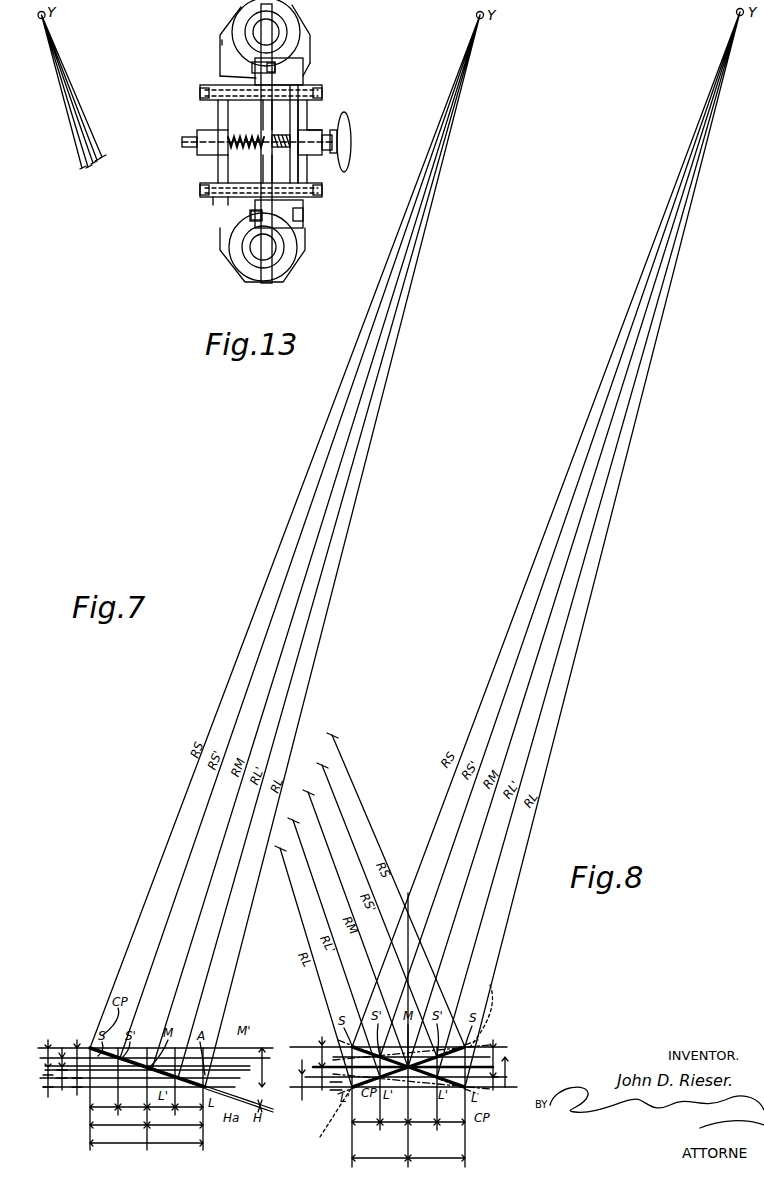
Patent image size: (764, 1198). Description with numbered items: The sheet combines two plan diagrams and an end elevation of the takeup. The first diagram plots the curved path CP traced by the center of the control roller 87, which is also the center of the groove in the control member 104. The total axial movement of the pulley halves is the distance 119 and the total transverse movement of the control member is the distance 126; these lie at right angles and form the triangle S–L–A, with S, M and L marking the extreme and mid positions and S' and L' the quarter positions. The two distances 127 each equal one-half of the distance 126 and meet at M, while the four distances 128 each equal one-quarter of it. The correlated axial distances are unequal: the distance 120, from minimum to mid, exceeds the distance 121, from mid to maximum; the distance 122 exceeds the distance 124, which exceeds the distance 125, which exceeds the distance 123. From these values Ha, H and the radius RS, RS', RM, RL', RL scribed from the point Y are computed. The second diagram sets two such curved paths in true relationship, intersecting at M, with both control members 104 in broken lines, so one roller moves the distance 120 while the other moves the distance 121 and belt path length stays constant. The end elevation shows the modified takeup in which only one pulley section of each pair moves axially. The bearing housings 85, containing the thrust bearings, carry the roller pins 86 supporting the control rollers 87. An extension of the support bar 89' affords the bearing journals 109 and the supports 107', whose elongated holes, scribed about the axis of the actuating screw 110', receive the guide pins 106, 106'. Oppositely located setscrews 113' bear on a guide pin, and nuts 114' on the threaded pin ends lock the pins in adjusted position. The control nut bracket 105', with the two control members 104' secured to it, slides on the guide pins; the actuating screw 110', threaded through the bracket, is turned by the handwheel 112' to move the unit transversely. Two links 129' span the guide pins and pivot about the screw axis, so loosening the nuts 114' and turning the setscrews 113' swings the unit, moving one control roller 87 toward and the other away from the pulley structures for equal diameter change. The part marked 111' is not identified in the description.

In FIG. 13, the bearing housing 85 is at (288, 12).
In FIG. 13, the roller pin 86 is at (252, 28).
In FIG. 13, the control roller 87 is at (252, 67).
In FIG. 13, the support bar 89' is at (196, 41).
In FIG. 8, the control member 104 is at (495, 1013).
In FIG. 13, the control member 104' is at (297, 133).
In FIG. 8, the control member 104' is at (327, 1117).
In FIG. 13, the control nut bracket 105' is at (261, 150).
In FIG. 13, the left bracket 106 is at (205, 126).
In FIG. 13, the guide pin 106' is at (234, 204).
In FIG. 13, the support 107' is at (279, 133).
In FIG. 13, the right bracket 109 is at (313, 150).
In FIG. 13, the actuating screw 110' is at (246, 133).
In FIG. 13, the flange 111' is at (324, 117).
In FIG. 13, the handwheel 112' is at (280, 130).
In FIG. 13, the setscrew 113' is at (264, 194).
In FIG. 13, the nut 114' is at (270, 129).
In FIG. 7, the total axial movement distance 119 is at (274, 1067).
In FIG. 7, the axial movement distance 120 is at (38, 1052).
In FIG. 8, the axial movement distance 120 is at (313, 1050).
In FIG. 7, the axial movement distance 121 is at (45, 1082).
In FIG. 8, the axial movement distance 121 is at (504, 1078).
In FIG. 7, the axial movement distance 122 is at (80, 1040).
In FIG. 8, the axial movement distance 122 is at (508, 1052).
In FIG. 7, the axial movement distance 123 is at (62, 1090).
In FIG. 8, the axial movement distance 123 is at (307, 1092).
In FIG. 7, the axial movement distance 124 is at (62, 1050).
In FIG. 8, the axial movement distance 124 is at (502, 1045).
In FIG. 7, the axial movement distance 125 is at (78, 1096).
In FIG. 8, the axial movement distance 125 is at (344, 1092).
In FIG. 7, the total transverse movement distance 126 is at (146, 1147).
In FIG. 7, the half transverse movement distance 127 is at (146, 1125).
In FIG. 8, the half transverse movement distance 127 is at (408, 1165).
In FIG. 7, the quarter transverse movement distance 128 is at (146, 1106).
In FIG. 8, the quarter transverse movement distance 128 is at (409, 1131).
In FIG. 13, the link 129' is at (264, 134).